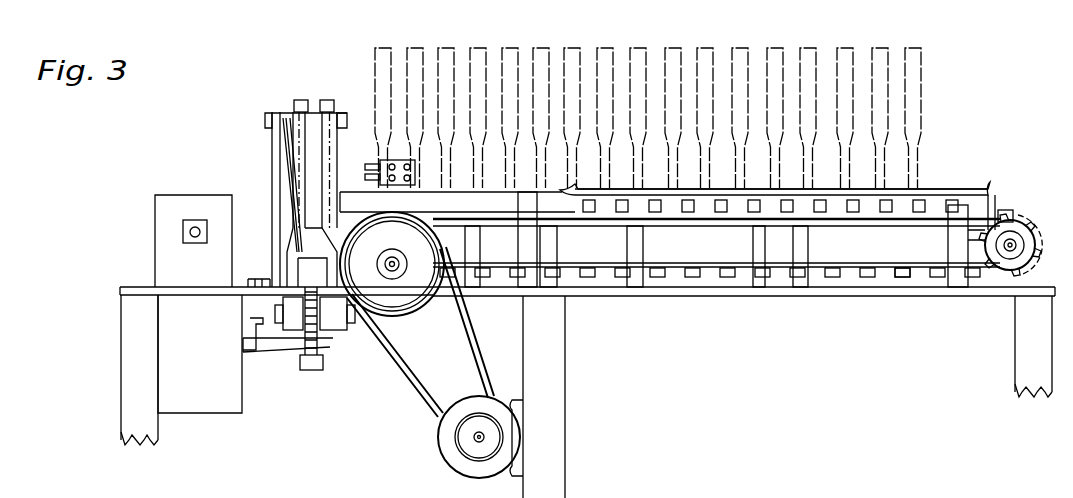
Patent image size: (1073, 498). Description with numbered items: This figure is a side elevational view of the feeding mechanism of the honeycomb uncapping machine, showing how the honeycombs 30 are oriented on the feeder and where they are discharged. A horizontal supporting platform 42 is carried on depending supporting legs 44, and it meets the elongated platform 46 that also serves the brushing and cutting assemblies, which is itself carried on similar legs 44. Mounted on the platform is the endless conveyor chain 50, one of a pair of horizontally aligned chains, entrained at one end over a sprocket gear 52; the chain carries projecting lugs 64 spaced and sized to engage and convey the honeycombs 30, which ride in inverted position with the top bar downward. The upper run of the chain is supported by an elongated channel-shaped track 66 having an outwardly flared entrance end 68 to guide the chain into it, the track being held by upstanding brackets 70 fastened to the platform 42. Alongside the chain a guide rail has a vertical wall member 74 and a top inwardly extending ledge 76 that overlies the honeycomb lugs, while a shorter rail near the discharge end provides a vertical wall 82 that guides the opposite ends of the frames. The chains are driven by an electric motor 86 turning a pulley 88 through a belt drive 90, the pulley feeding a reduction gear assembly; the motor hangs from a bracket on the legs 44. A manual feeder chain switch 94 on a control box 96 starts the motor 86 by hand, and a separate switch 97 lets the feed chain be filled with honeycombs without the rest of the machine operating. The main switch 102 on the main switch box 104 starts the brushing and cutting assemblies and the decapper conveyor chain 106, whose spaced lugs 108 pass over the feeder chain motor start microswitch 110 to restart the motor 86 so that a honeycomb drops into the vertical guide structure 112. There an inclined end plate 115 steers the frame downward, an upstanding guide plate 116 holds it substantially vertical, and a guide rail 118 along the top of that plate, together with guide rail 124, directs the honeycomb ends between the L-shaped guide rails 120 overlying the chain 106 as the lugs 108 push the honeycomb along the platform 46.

The honeycomb 30 is at (926, 150).
The supporting platform 42 is at (720, 292).
The supporting legs 44 is at (133, 374).
The elongated platform 46 is at (134, 289).
The endless conveyor chain 50 is at (896, 278).
The sprocket gear 52 is at (1021, 222).
The lug 64 is at (841, 278).
The elongated track 66 is at (720, 221).
The flared entrance end 68 is at (972, 236).
The upstanding bracket 70 is at (800, 243).
The vertical wall member 74 is at (951, 193).
The horizontal ledge 76 is at (931, 191).
The vertical wall 82 is at (480, 200).
The electric motor 86 is at (460, 464).
The pulley 88 is at (413, 285).
The belt drive 90 is at (407, 362).
The manual feeder chain switch 94 is at (194, 220).
The control box 96 is at (155, 247).
The switch 97 is at (385, 160).
The main switch 102 is at (243, 340).
The main switch box 104 is at (200, 382).
The conveyor chain 106 is at (318, 332).
The lug 108 is at (300, 357).
The feeder chain motor start microswitch 110 is at (322, 362).
The vertical guide structure 112 is at (265, 134).
The end plate 115 is at (297, 242).
The guide plate 116 is at (276, 155).
The guide rail 118 is at (286, 110).
The guide rail 120 is at (300, 100).
The guide rail 124 is at (337, 112).